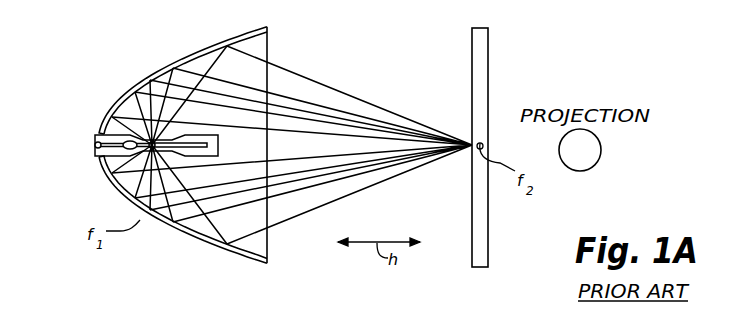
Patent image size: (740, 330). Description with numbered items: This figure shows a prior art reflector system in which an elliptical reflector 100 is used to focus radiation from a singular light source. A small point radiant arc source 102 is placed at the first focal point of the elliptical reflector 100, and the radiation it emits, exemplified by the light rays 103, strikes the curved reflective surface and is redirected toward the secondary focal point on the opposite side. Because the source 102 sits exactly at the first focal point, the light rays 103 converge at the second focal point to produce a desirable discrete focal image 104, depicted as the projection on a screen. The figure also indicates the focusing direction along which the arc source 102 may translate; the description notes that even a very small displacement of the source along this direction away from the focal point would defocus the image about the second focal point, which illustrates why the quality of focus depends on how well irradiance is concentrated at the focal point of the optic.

The elliptical reflector 100 is at (138, 72).
The radiant arc source 102 is at (115, 99).
The light rays 103 is at (313, 118).
The discrete focal image 104 is at (583, 171).